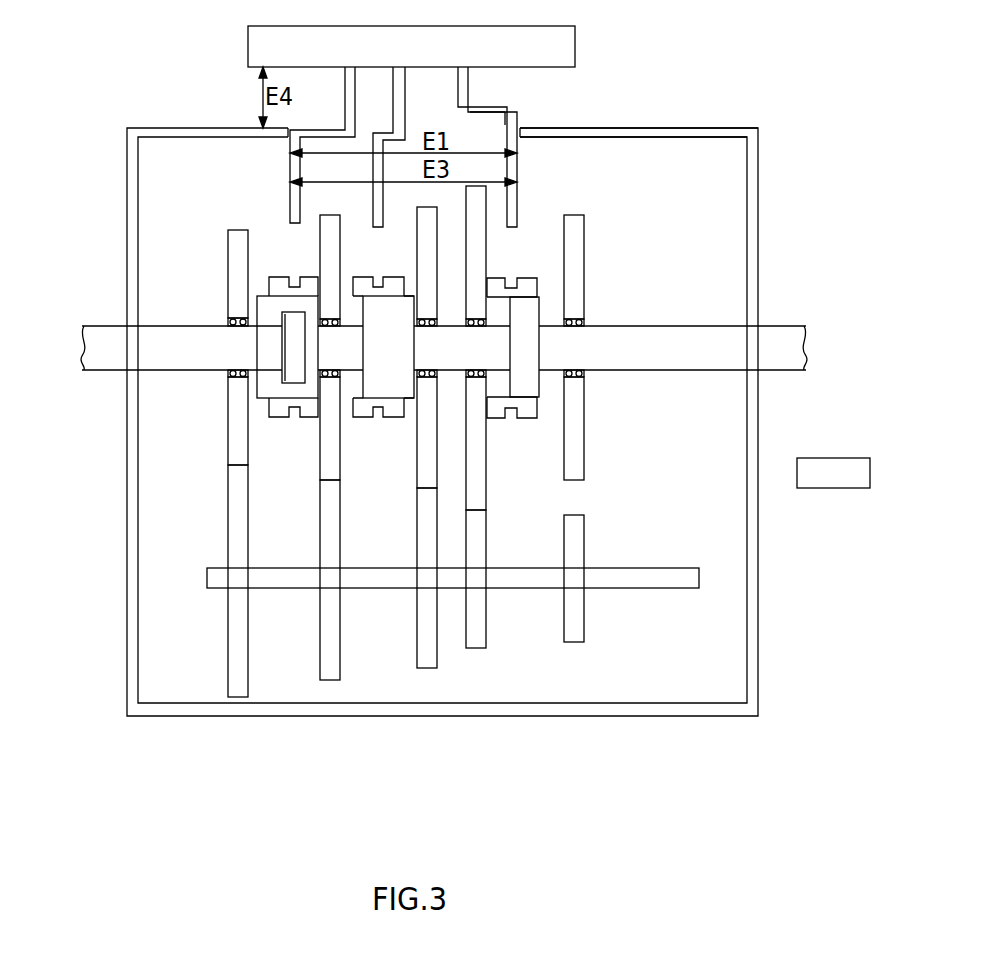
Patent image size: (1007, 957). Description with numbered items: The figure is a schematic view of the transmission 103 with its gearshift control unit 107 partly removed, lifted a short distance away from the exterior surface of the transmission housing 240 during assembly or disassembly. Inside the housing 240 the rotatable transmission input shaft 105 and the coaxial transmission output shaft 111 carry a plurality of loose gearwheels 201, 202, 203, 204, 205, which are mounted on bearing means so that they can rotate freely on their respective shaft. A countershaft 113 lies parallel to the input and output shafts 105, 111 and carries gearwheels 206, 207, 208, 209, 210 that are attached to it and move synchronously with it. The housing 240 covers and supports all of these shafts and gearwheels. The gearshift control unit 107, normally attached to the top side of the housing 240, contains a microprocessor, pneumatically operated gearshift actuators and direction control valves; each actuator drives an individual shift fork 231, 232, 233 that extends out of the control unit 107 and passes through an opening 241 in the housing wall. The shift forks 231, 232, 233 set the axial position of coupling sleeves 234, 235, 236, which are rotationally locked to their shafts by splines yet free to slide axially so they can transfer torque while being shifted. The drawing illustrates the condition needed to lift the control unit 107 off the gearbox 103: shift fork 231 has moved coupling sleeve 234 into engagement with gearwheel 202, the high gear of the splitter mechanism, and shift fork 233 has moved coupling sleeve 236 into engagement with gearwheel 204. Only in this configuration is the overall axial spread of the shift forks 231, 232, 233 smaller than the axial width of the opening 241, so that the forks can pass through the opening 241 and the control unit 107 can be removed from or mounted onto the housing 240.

The transmission 103 is at (715, 104).
The transmission input shaft 105 is at (105, 347).
The gearshift control unit 107 is at (448, 59).
The transmission output shaft 111 is at (782, 348).
The countershaft 113 is at (678, 578).
The loose gearwheel 201 is at (233, 417).
The loose gearwheel 202 is at (330, 450).
The loose gearwheel 203 is at (427, 457).
The loose gearwheel 204 is at (475, 447).
The loose gearwheel 205 is at (573, 452).
The countershaft gearwheel 206 is at (240, 683).
The countershaft gearwheel 207 is at (330, 674).
The countershaft gearwheel 208 is at (427, 663).
The countershaft gearwheel 209 is at (475, 640).
The countershaft gearwheel 210 is at (575, 640).
The shift fork 231 is at (293, 202).
The shift fork 232 is at (400, 88).
The shift fork 233 is at (512, 212).
The coupling sleeve 234 is at (267, 290).
The coupling sleeve 235 is at (368, 290).
The coupling sleeve 236 is at (542, 287).
The transmission housing 240 is at (637, 137).
The opening 241 is at (476, 133).